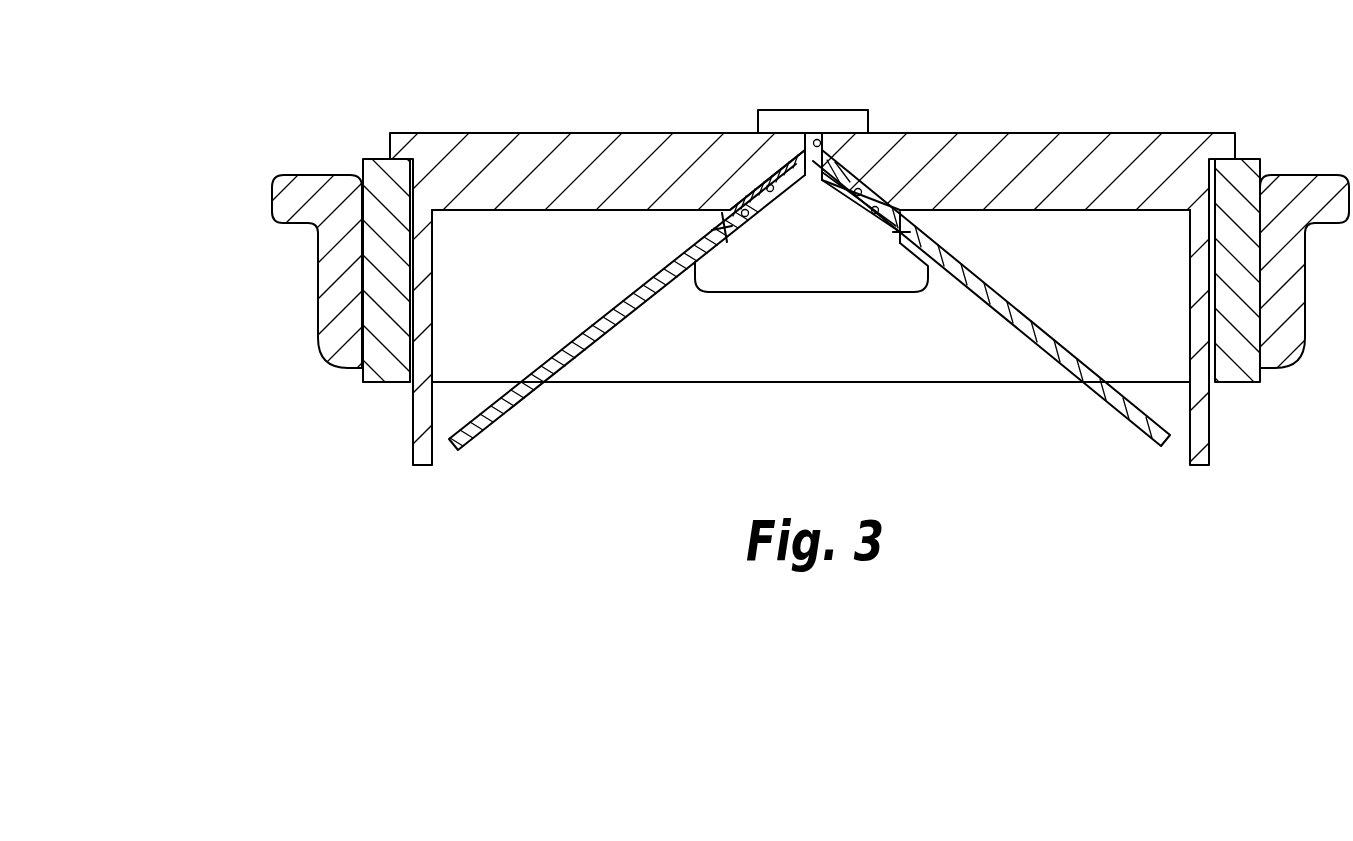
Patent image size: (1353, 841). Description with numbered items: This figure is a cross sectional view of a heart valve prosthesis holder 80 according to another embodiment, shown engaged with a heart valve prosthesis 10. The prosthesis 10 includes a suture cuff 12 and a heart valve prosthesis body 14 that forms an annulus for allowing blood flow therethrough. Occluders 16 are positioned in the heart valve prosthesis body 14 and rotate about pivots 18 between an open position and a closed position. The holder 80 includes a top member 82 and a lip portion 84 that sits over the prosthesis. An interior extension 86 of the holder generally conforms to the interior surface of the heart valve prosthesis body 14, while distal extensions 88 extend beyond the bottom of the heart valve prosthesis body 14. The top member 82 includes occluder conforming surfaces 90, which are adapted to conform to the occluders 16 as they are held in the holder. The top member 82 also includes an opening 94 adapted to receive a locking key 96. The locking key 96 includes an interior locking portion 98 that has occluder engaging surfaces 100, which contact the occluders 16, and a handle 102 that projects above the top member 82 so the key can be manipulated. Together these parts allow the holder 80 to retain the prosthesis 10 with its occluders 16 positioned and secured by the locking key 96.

The heart valve prosthesis 10 is at (314, 140).
The suture cuff 12 is at (292, 192).
The heart valve prosthesis body 14 is at (385, 375).
The occluders 16 is at (600, 326).
The pivots 18 is at (714, 230).
The heart valve prosthesis holder 80 is at (424, 102).
The top member 82 is at (555, 150).
The lip portion 84 is at (393, 143).
The interior extension 86 is at (430, 235).
The distal extensions 88 is at (413, 442).
The occluder conforming surfaces 90 is at (782, 194).
The opening 94 is at (823, 143).
The locking key 96 is at (848, 104).
The interior locking portion 98 is at (798, 284).
The occluder engaging surfaces 100 is at (868, 228).
The handle 102 is at (797, 108).